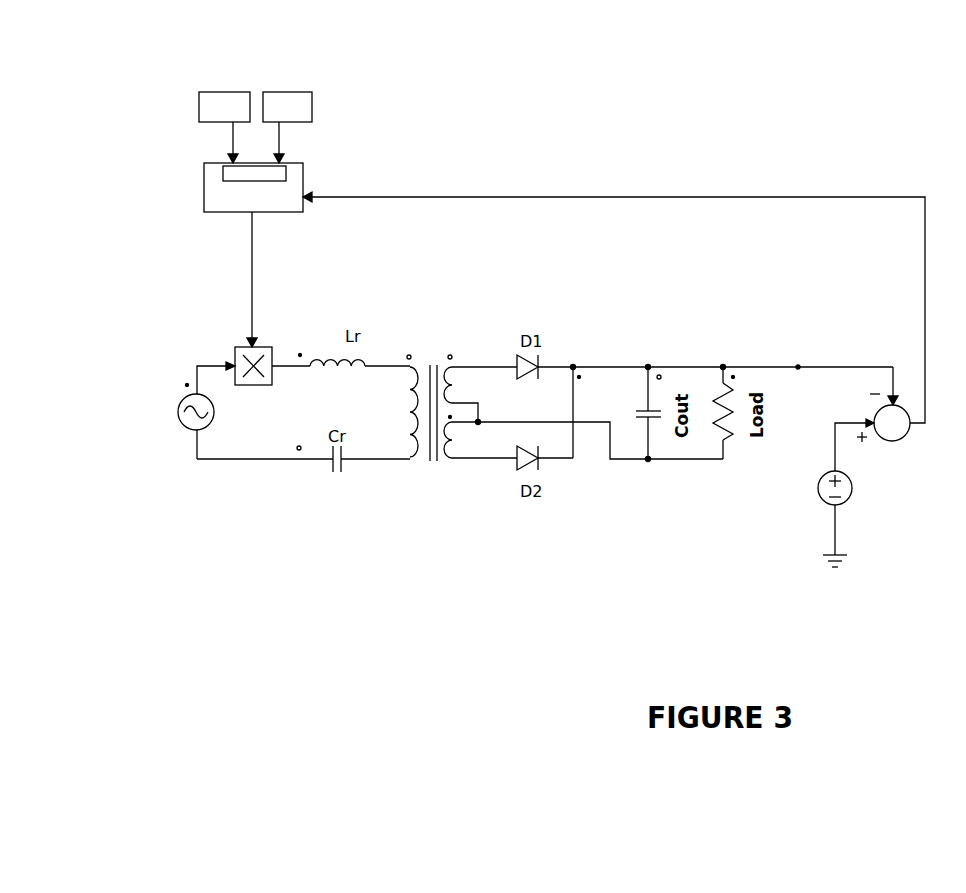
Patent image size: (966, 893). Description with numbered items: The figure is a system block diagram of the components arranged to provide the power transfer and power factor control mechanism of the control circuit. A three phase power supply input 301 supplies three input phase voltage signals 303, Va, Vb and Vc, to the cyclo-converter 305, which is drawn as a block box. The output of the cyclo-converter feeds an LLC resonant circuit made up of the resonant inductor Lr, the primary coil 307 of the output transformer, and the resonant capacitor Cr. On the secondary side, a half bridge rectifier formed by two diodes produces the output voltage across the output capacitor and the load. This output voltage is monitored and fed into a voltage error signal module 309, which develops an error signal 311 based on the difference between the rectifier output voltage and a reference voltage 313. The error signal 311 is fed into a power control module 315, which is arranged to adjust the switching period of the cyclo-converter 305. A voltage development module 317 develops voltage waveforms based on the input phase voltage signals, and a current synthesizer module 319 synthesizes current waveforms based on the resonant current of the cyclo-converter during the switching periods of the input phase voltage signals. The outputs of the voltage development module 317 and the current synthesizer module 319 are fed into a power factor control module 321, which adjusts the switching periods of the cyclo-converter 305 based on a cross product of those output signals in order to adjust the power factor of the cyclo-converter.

The three phase power supply input 301 is at (151, 466).
The input phase voltage signals 303 is at (181, 366).
The cyclo-converter 305 is at (297, 322).
The primary coil of the output transformer 307 is at (392, 463).
The voltage error signal module 309 is at (903, 443).
The error signal 311 is at (614, 264).
The reference voltage 313 is at (866, 496).
The power control module 315 is at (224, 255).
The voltage development module 317 is at (190, 111).
The current synthesizer module 319 is at (318, 111).
The power factor control module 321 is at (292, 151).